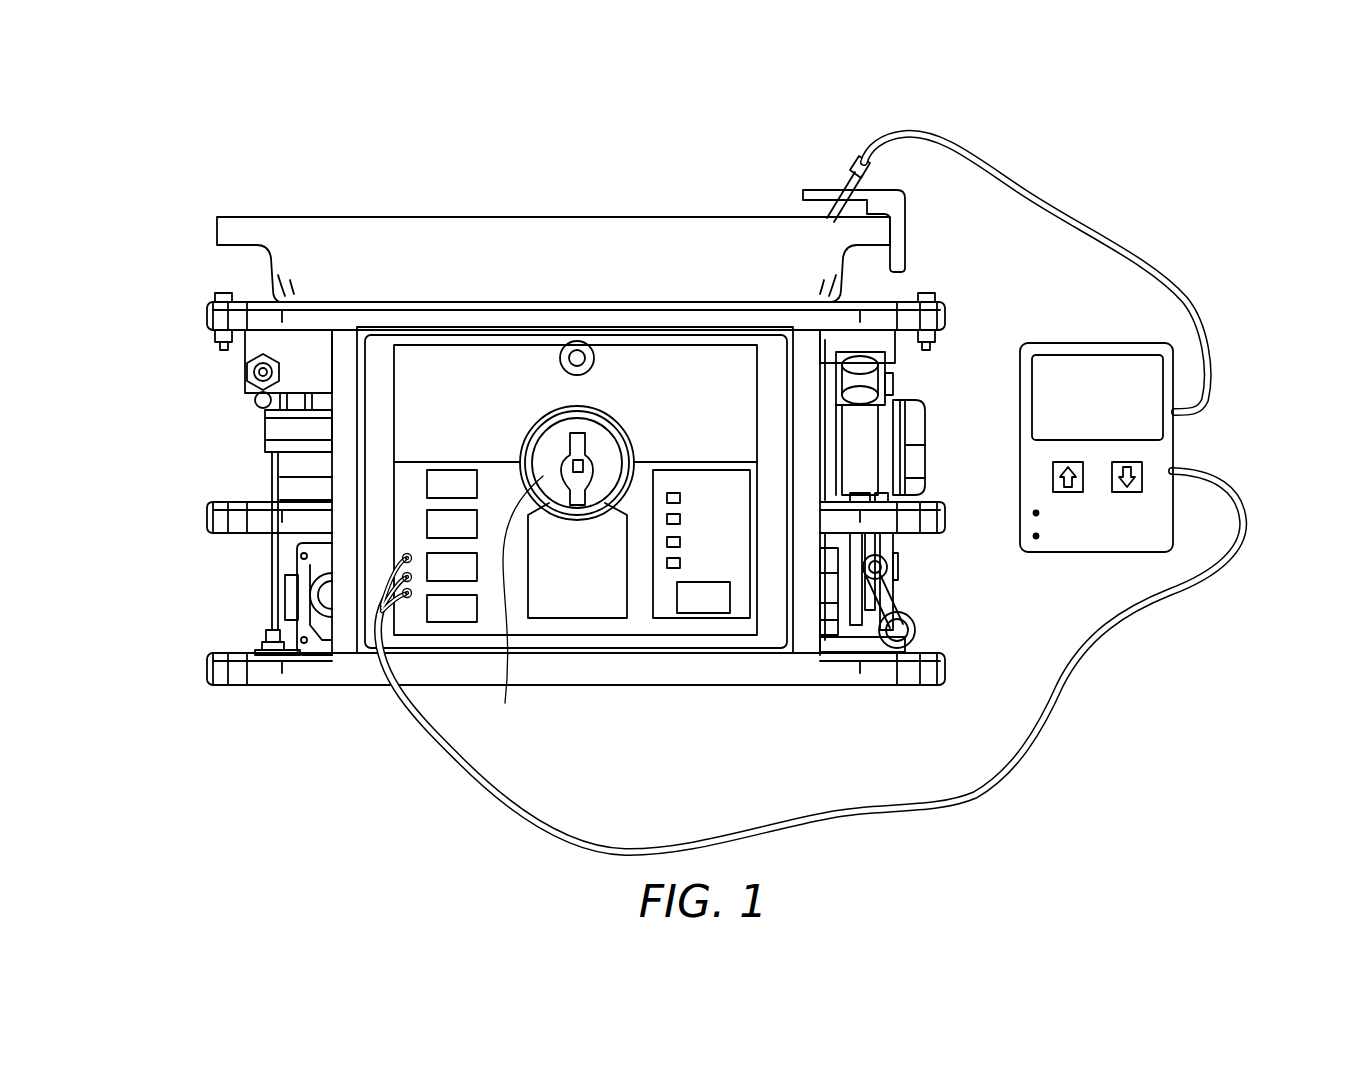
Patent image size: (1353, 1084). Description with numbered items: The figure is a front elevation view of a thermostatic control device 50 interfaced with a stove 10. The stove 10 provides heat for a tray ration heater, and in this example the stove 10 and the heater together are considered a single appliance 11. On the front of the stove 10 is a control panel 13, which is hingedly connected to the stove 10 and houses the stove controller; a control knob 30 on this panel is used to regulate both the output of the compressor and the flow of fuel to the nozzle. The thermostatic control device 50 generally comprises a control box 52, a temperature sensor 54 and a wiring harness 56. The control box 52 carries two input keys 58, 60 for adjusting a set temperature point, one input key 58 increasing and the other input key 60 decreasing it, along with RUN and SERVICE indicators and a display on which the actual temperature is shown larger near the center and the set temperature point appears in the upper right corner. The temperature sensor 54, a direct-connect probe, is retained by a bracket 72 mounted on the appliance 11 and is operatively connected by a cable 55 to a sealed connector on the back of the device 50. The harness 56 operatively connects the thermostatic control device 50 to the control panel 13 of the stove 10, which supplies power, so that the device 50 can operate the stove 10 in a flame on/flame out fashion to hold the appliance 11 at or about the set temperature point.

The stove 10 is at (196, 304).
The appliance 11 is at (293, 203).
The control panel 13 is at (430, 216).
The control knob 30 is at (516, 609).
The thermostatic control device 50 is at (1135, 466).
The control box 52 is at (1157, 455).
The temperature sensor 54 is at (848, 165).
The cable 55 is at (1160, 259).
The wiring harness 56 is at (1042, 732).
The input key 58 is at (1053, 475).
The input key 60 is at (1127, 495).
The bracket 72 is at (908, 208).